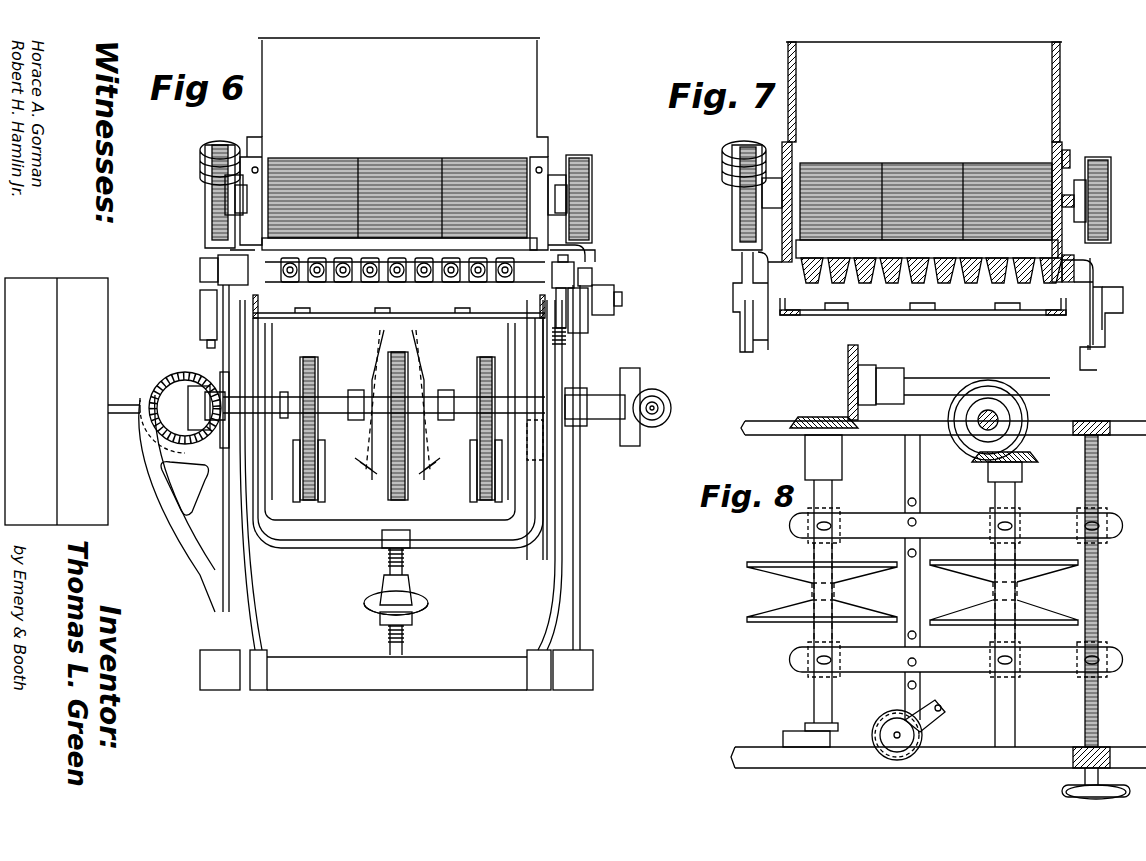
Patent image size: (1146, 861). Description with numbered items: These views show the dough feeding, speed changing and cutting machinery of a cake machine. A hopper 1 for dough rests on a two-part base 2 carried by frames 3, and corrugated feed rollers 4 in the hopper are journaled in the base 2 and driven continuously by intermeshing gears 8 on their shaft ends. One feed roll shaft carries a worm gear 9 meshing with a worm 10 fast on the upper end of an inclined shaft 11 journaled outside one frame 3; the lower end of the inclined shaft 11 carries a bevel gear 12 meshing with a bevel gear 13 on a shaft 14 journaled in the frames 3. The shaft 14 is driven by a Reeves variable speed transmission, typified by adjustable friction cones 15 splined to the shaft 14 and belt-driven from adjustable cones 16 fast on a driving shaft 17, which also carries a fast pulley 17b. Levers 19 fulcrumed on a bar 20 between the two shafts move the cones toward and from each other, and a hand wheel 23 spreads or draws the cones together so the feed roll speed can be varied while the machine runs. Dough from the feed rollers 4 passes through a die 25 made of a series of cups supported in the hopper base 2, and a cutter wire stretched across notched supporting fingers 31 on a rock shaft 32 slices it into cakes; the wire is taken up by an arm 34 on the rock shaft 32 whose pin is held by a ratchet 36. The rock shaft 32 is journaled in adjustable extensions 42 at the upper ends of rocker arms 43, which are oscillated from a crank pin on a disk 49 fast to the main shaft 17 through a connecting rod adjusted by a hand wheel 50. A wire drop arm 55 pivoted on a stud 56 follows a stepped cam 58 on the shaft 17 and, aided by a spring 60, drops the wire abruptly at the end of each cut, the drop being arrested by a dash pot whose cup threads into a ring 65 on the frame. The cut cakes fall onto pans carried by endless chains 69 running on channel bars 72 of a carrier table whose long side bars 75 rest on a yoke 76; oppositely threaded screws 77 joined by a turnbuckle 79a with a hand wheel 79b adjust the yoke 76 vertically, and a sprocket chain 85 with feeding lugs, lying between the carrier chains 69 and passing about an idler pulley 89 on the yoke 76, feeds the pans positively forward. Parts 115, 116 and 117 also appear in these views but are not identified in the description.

In FIG. 6, the hopper 1 is at (520, 82).
In FIG. 7, the hopper 1 is at (1035, 75).
In FIG. 6, the two part base 2 is at (250, 160).
In FIG. 7, the two part base 2 is at (782, 152).
In FIG. 6, the frames 3 is at (225, 623).
In FIG. 7, the frames 3 is at (1100, 330).
In FIG. 8, the frames 3 is at (770, 425).
In FIG. 6, the corrugated feed rollers 4 is at (327, 165).
In FIG. 7, the corrugated feed rollers 4 is at (845, 170).
In FIG. 6, the intermeshing gears 8 is at (578, 160).
In FIG. 7, the intermeshing gears 8 is at (1100, 160).
In FIG. 6, the worm gear 9 is at (220, 213).
In FIG. 7, the worm gear 9 is at (738, 213).
In FIG. 6, the worm 10 is at (215, 150).
In FIG. 7, the worm 10 is at (735, 150).
In FIG. 7, the inclined shaft 11 is at (745, 325).
In FIG. 8, the inclined shaft 11 is at (990, 416).
In FIG. 8, the bevel gear 12 is at (1020, 412).
In FIG. 8, the bevel gear 13 is at (1038, 455).
In FIG. 8, the shaft 14 is at (1005, 720).
In FIG. 8, the adjustable friction cones 15 is at (1098, 562).
In FIG. 6, the adjustable cones 16 is at (372, 480).
In FIG. 8, the adjustable cones 16 is at (775, 562).
In FIG. 6, the driving shaft 17 is at (175, 408).
In FIG. 8, the driving shaft 17 is at (810, 700).
In FIG. 6, the fast pulley 17b is at (95, 308).
In FIG. 8, the levers 19 is at (862, 515).
In FIG. 8, the bar 20 is at (920, 483).
In FIG. 8, the hand wheel 23 is at (1060, 797).
In FIG. 7, the die 25 is at (935, 283).
In FIG. 6, the supporting fingers 31 is at (325, 284).
In FIG. 6, the rock shaft 32 is at (455, 290).
In FIG. 6, the arm 34 is at (580, 275).
In FIG. 6, the ratchet 36 is at (585, 262).
In FIG. 6, the adjustable extensions 42 is at (205, 278).
In FIG. 6, the rocker arms 43 is at (250, 573).
In FIG. 6, the disk 49 is at (632, 372).
In FIG. 6, the hand wheel 50 is at (660, 393).
In FIG. 6, the wire drop arm 55 is at (580, 318).
In FIG. 6, the stud 56 is at (617, 297).
In FIG. 6, the cam 58 is at (552, 387).
In FIG. 6, the spring 60 is at (565, 338).
In FIG. 8, the ring 65 is at (945, 712).
In FIG. 6, the endless chains 69 is at (310, 357).
In FIG. 6, the channel bars 72 is at (385, 308).
In FIG. 7, the channel bars 72 is at (850, 305).
In FIG. 6, the side bars 75 is at (262, 305).
In FIG. 7, the side bars 75 is at (798, 295).
In FIG. 6, the yoke 76 is at (500, 547).
In FIG. 6, the oppositely threaded screws 77 is at (405, 567).
In FIG. 6, the turnbuckle 79a is at (390, 588).
In FIG. 6, the hand wheel 79b is at (380, 620).
In FIG. 6, the sprocket chain 85 is at (398, 352).
In FIG. 6, the idler pulley 89 is at (325, 452).
In FIG. 6, the hub 115 is at (212, 368).
In FIG. 8, the hub 115 is at (828, 405).
In FIG. 6, the gear disc 116 is at (215, 372).
In FIG. 8, the gear disc 116 is at (847, 367).
In FIG. 8, the shaft 117 is at (948, 385).